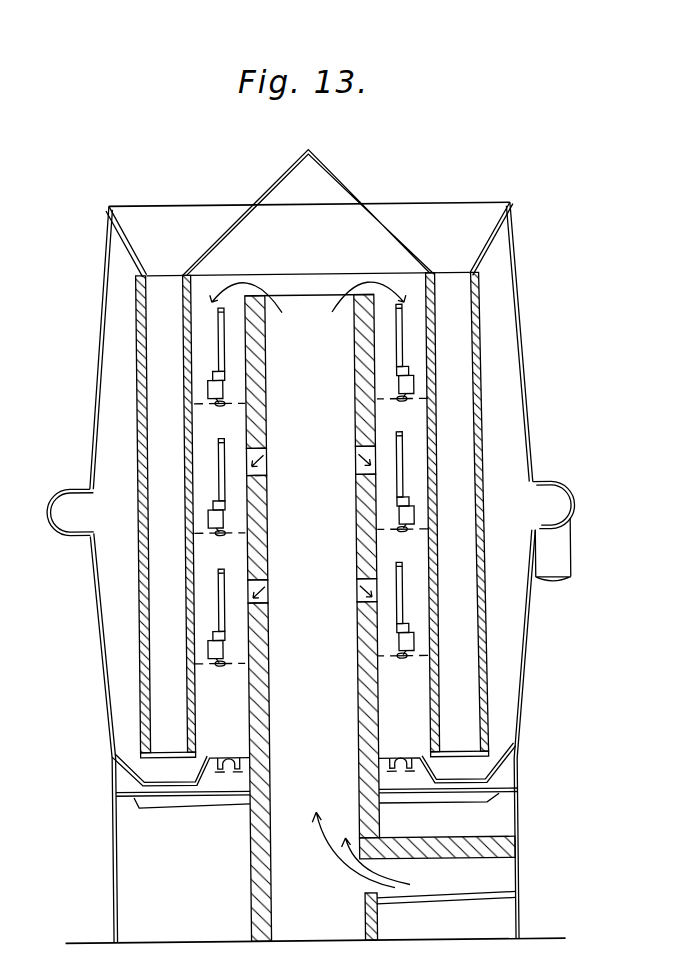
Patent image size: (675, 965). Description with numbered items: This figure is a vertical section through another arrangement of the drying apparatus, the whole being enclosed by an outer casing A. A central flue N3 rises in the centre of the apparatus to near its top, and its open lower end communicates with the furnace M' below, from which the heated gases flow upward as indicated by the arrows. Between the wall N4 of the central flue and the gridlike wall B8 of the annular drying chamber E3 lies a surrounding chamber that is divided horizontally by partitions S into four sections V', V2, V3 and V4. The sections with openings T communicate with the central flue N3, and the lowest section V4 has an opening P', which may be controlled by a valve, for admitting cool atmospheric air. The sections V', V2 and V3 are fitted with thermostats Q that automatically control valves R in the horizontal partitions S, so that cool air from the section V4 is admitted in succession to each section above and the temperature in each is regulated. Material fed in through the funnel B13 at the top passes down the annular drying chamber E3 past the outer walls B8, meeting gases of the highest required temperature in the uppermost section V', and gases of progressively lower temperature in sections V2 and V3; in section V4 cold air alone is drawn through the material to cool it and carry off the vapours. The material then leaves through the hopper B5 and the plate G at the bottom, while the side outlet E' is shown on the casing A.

The casing A is at (104, 322).
The funnel B13 is at (309, 213).
The gridlike wall B8 is at (550, 690).
The drying chamber E3 is at (458, 410).
The outlet pipe E' is at (572, 531).
The wall N4 is at (360, 345).
The central flue N3 is at (310, 343).
The lower chamber N is at (355, 768).
The openings T is at (357, 449).
The section V' is at (310, 355).
The section V2 is at (310, 468).
The section V3 is at (310, 602).
The section V4 is at (318, 731).
The thermostats Q is at (227, 344).
The valves R is at (214, 408).
The horizontal partitions S is at (203, 537).
The opening P' is at (314, 800).
The hopper B5 is at (476, 769).
The grate plate G is at (486, 799).
The furnace M' is at (437, 888).